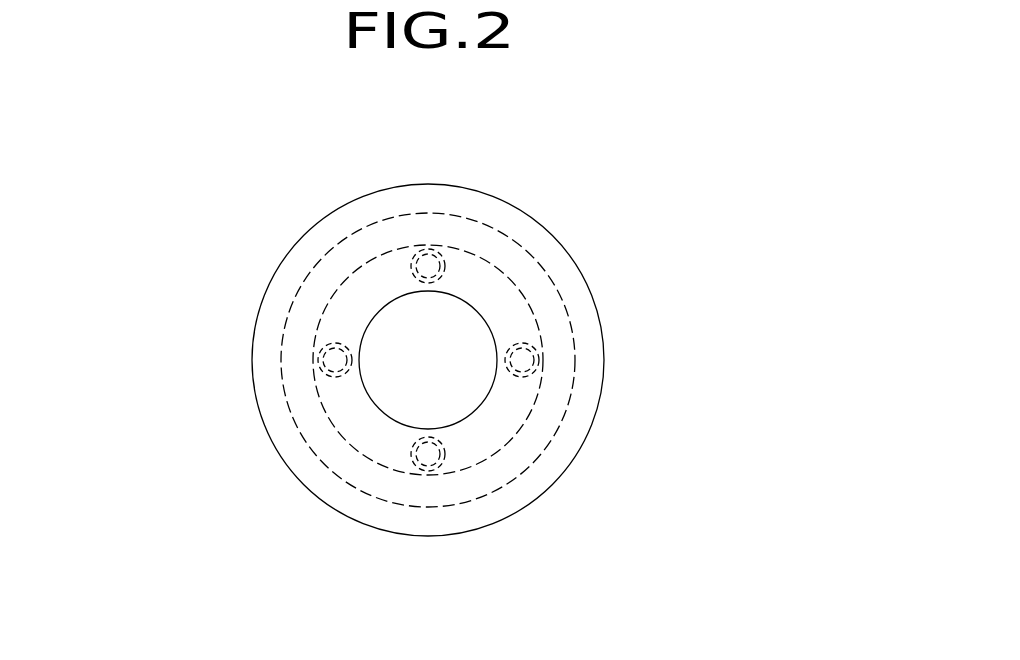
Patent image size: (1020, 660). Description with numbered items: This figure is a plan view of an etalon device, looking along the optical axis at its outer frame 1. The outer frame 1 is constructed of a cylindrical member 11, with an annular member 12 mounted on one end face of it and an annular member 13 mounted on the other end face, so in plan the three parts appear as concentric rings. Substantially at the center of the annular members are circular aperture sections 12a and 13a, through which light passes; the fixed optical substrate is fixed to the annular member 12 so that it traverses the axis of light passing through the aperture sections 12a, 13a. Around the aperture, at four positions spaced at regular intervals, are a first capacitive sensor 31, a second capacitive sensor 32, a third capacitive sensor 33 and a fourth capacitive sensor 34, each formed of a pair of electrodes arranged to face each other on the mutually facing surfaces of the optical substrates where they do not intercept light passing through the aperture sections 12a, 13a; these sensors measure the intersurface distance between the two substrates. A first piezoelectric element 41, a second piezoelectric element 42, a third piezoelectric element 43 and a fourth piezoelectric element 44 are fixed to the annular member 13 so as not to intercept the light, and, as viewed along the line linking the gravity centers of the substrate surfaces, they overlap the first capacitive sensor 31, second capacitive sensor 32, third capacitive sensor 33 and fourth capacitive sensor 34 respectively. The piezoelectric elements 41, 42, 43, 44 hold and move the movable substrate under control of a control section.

The outer frame 1 is at (183, 423).
The cylindrical member 11 is at (291, 460).
The annular member 12 is at (322, 448).
The annular member 13 is at (327, 497).
The aperture section 12a is at (378, 315).
The aperture section 13a is at (491, 391).
The first capacitive sensor 31 is at (315, 379).
The second capacitive sensor 32 is at (406, 250).
The third capacitive sensor 33 is at (534, 343).
The fourth capacitive sensor 34 is at (441, 468).
The first piezoelectric element 41 is at (332, 355).
The second piezoelectric element 42 is at (432, 265).
The third piezoelectric element 43 is at (523, 365).
The fourth piezoelectric element 44 is at (428, 455).